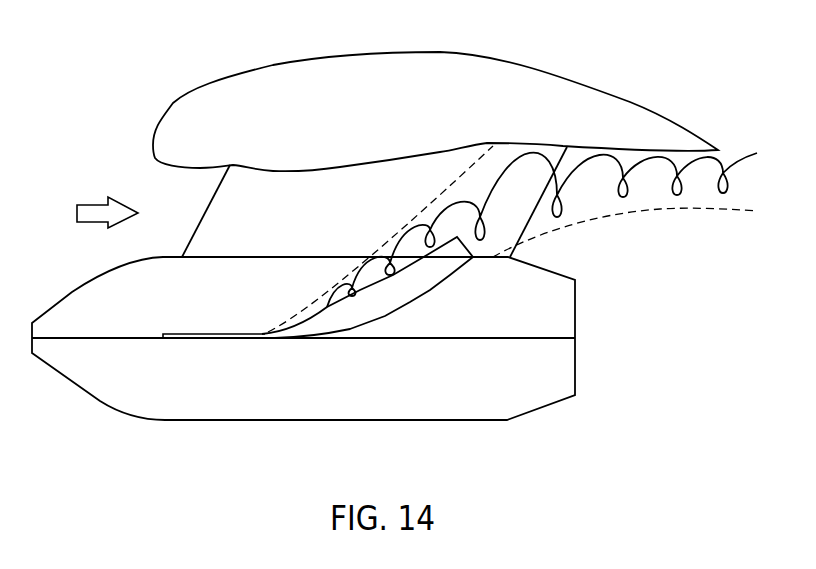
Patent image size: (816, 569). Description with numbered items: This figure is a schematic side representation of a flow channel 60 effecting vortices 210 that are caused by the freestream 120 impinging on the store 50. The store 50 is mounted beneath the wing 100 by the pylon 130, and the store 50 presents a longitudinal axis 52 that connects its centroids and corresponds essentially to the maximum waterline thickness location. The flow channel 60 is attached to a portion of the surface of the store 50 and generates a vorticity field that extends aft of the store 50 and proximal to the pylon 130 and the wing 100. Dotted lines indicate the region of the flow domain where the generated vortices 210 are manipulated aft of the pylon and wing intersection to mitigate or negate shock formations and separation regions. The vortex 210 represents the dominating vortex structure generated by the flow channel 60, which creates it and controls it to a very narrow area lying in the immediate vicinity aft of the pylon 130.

The wing 100 is at (352, 70).
The pylon 130 is at (213, 203).
The freestream 120 is at (97, 202).
The store 50 is at (308, 418).
The longitudinal axis 52 is at (478, 339).
The flow channel 60 is at (432, 285).
The vortex 210 is at (731, 187).